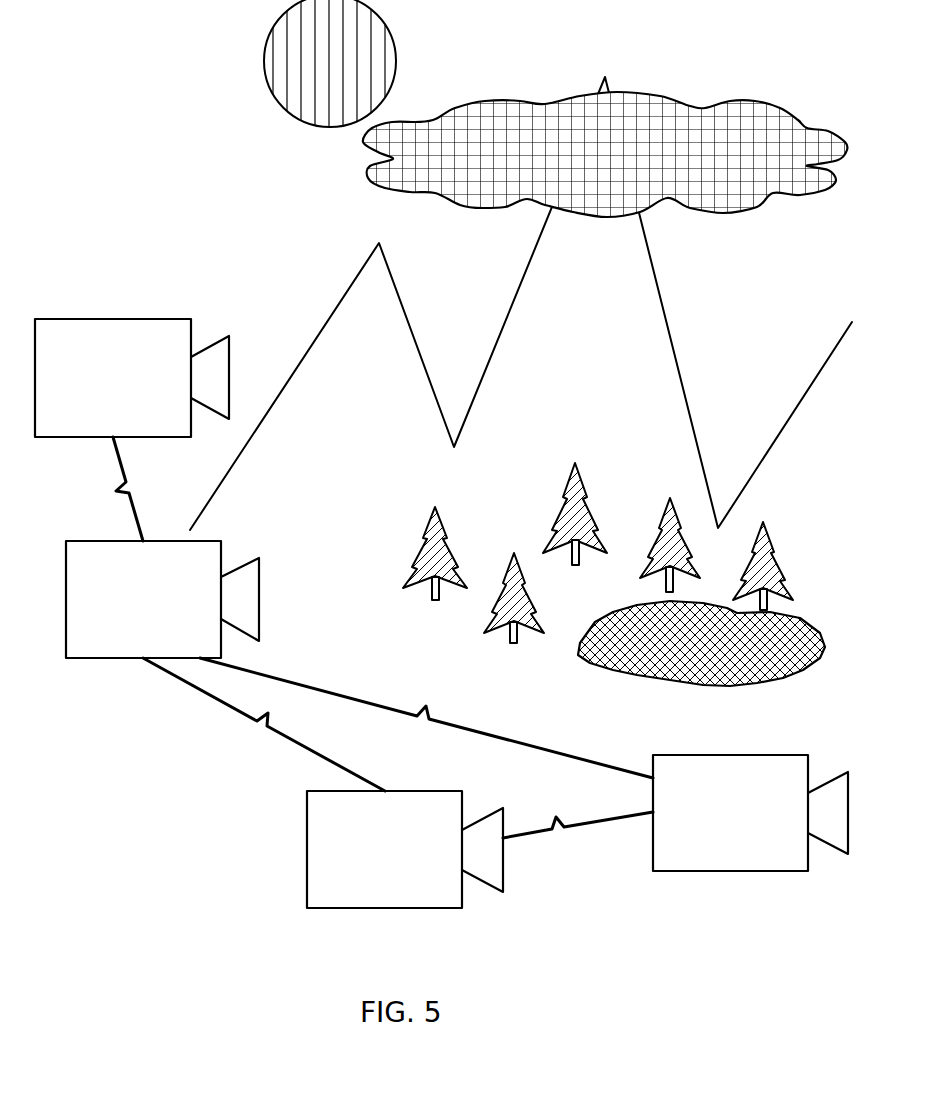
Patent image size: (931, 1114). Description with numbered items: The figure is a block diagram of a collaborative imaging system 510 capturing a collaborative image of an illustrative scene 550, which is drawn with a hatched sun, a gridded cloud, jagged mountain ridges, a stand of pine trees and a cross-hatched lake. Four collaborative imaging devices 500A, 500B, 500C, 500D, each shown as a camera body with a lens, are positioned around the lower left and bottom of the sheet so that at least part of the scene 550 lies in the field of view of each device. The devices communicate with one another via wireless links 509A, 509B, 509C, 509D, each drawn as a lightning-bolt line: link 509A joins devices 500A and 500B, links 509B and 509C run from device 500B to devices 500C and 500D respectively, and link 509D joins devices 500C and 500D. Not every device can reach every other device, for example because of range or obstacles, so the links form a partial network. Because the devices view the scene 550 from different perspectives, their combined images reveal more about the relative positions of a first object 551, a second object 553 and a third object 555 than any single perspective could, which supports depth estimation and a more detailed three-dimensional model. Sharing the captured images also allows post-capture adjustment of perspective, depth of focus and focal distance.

The scene 550 is at (196, 165).
The collaborative imaging system 510 is at (188, 856).
The collaborative imaging device 500A is at (113, 319).
The collaborative imaging device 500B is at (130, 658).
The collaborative imaging device 500C is at (307, 845).
The collaborative imaging device 500D is at (731, 755).
The wireless link 509A is at (118, 500).
The wireless link 509B is at (262, 733).
The wireless link 509C is at (435, 727).
The wireless link 509D is at (570, 838).
The first object 551 is at (812, 622).
The second object 553 is at (768, 525).
The third object 555 is at (670, 498).